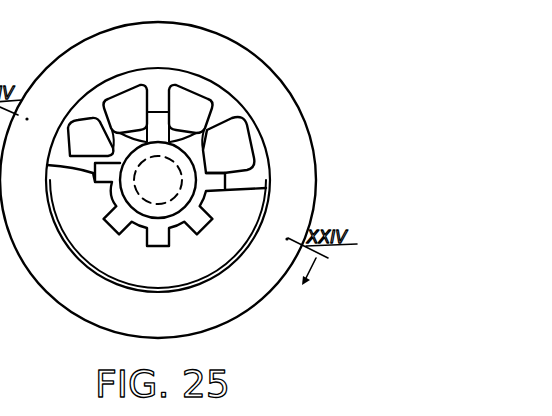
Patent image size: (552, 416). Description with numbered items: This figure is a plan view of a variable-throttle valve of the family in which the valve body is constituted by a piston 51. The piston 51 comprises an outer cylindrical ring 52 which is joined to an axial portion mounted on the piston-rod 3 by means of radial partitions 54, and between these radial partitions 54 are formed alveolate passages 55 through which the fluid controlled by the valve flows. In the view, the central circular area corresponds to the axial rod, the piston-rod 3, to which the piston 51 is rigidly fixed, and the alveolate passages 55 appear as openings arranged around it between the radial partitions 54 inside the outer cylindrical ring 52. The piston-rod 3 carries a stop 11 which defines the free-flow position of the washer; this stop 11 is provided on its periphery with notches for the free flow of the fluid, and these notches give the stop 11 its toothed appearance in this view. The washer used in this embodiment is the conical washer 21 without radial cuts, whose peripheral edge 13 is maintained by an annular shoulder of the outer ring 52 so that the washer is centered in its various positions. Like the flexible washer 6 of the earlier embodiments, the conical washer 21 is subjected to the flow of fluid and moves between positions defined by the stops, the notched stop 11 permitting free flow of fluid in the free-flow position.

The outer cylindrical ring 52 is at (55, 57).
The piston 51 is at (233, 32).
The radial partitions 54 is at (261, 120).
The peripheral edge 13 is at (187, 291).
The alveolate passages 55 is at (192, 100).
The piston-rod 3 is at (196, 200).
The stop 11 is at (105, 214).
The conical washer 21 is at (90, 238).
The flexible washer 6 is at (7, 334).